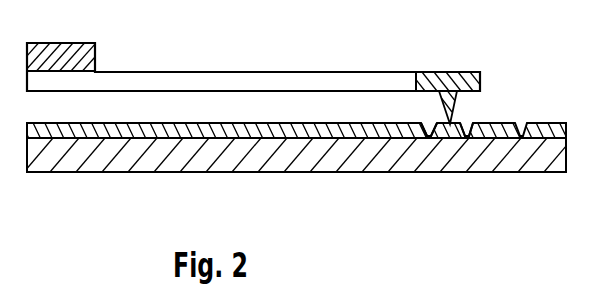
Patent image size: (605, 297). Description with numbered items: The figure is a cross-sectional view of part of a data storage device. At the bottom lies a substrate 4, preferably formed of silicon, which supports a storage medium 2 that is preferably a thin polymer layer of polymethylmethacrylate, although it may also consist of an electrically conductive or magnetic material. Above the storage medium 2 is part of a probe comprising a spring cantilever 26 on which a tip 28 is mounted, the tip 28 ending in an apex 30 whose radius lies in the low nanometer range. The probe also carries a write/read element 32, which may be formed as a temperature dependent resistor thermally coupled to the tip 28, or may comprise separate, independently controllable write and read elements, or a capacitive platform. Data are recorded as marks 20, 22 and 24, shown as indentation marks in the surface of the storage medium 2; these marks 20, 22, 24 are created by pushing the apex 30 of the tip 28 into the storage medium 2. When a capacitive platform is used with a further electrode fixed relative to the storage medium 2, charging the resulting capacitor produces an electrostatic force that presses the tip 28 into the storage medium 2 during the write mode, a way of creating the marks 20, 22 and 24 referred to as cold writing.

The storage medium 2 is at (568, 145).
The substrate 4 is at (52, 173).
The mark 20 is at (427, 137).
The mark 22 is at (468, 136).
The mark 24 is at (524, 122).
The spring cantilever 26 is at (233, 72).
The tip 28 is at (453, 100).
The apex 30 is at (448, 123).
The write/read element 32 is at (441, 72).